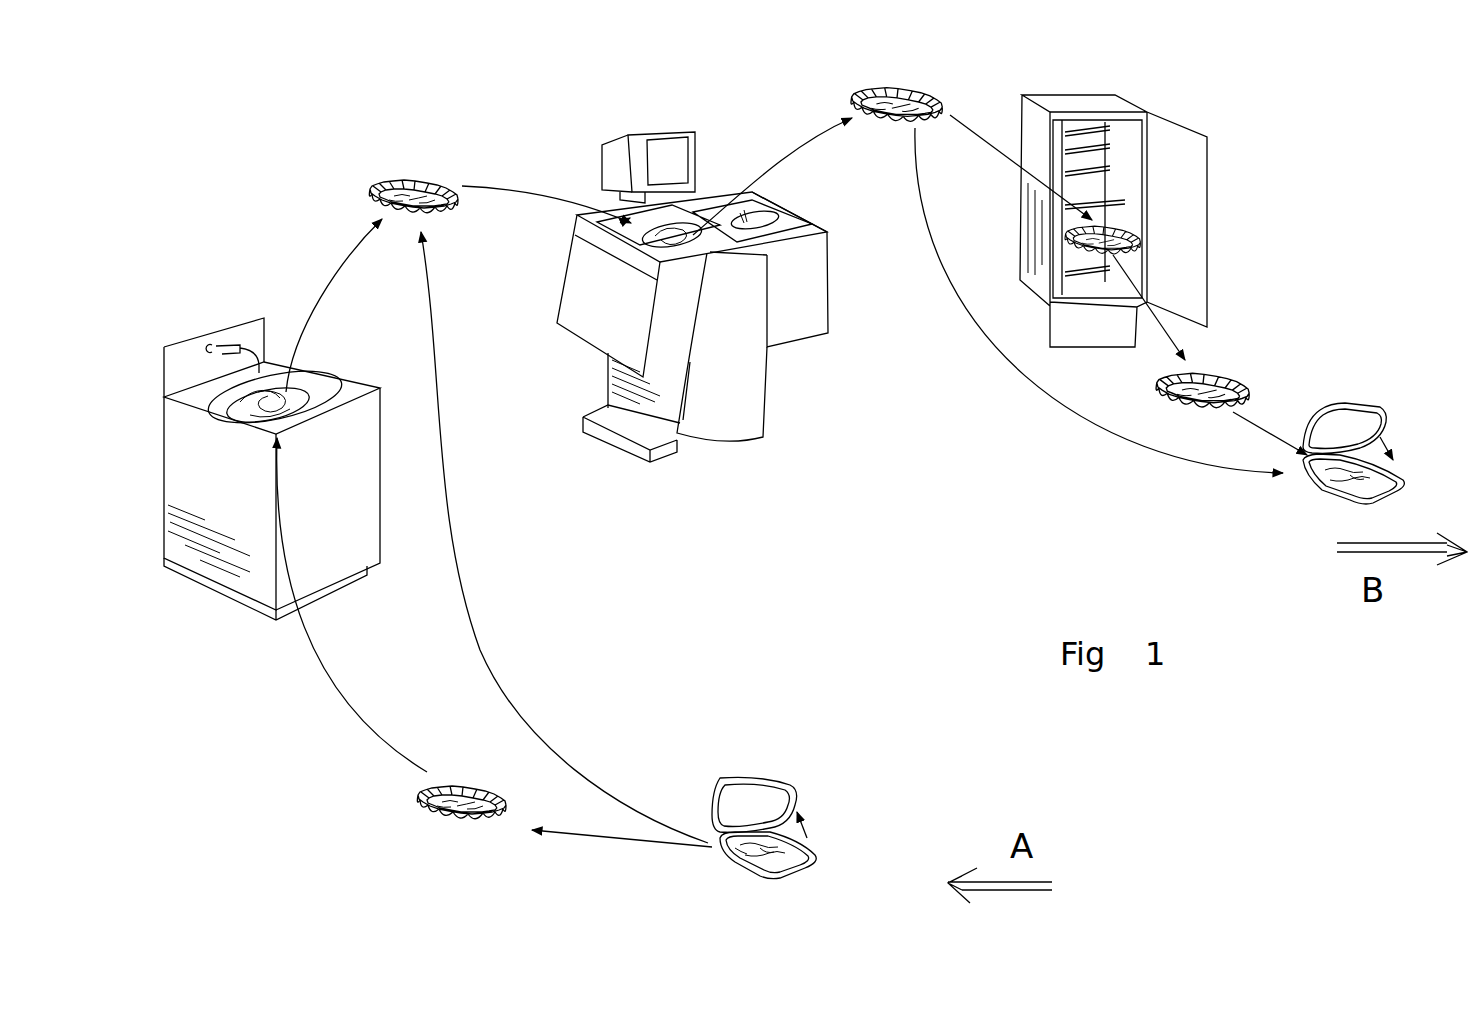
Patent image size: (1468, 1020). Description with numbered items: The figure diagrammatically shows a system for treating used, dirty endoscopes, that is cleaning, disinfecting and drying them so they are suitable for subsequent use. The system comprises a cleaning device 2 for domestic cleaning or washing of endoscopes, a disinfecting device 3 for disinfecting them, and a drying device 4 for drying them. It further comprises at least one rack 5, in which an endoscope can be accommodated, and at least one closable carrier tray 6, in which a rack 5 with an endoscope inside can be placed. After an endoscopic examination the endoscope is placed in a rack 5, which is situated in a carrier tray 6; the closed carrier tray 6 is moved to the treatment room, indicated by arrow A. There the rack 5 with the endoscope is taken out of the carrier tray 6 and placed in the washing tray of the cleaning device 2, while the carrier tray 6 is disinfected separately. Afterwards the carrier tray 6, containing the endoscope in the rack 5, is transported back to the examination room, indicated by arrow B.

The cleaning device 2 is at (340, 363).
The disinfecting device 3 is at (717, 190).
The drying device 4 is at (1164, 111).
The rack 5 is at (495, 785).
The carrier tray 6 is at (832, 851).